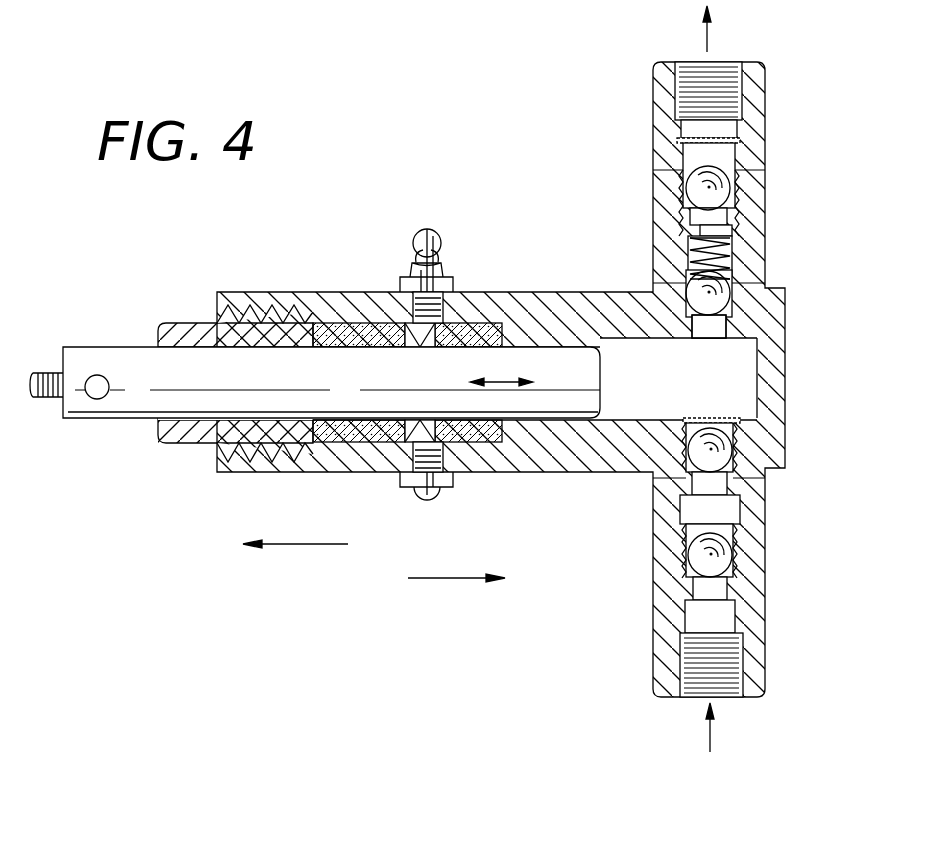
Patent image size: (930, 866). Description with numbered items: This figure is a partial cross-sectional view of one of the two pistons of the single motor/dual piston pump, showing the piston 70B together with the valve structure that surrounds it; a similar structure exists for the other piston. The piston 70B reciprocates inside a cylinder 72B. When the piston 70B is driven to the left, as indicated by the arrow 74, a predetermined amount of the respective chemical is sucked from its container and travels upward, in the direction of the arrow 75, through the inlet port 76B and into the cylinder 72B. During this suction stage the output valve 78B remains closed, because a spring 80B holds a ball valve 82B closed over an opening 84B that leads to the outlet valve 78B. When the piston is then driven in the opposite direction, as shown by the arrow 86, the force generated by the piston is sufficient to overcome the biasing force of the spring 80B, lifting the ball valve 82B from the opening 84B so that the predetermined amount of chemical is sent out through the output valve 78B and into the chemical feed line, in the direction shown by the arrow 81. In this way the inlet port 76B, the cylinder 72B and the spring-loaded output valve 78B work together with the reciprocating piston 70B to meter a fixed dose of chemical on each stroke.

The piston 70B is at (122, 355).
The cylinder 72B is at (628, 365).
The arrow 74 is at (303, 545).
The arrow 75 is at (712, 732).
The inlet port 76B is at (790, 440).
The output valve 78B is at (717, 266).
The spring 80B is at (688, 256).
The arrow 81 is at (708, 45).
The ball valve 82B is at (716, 293).
The opening 84B is at (716, 325).
The arrow 86 is at (463, 578).